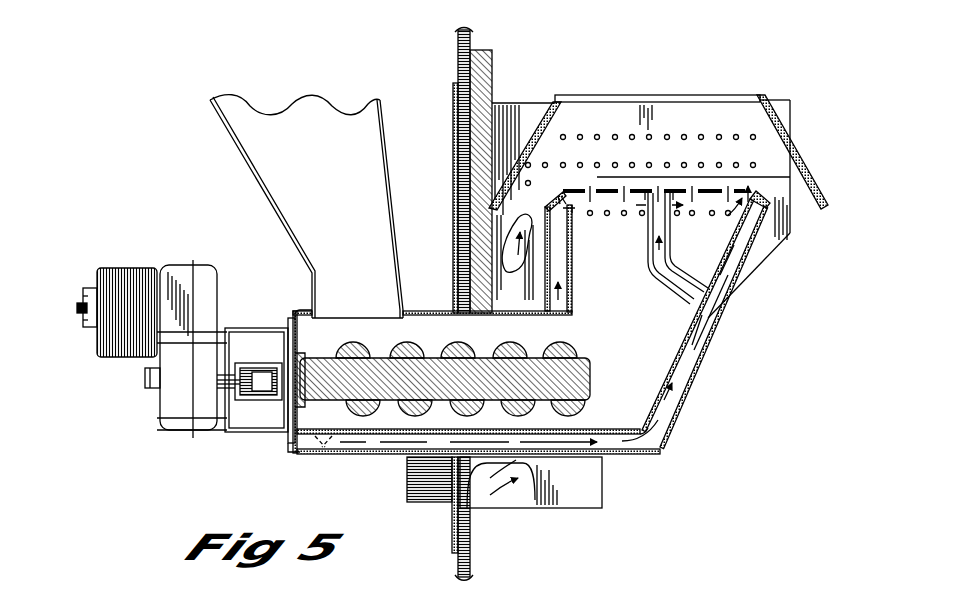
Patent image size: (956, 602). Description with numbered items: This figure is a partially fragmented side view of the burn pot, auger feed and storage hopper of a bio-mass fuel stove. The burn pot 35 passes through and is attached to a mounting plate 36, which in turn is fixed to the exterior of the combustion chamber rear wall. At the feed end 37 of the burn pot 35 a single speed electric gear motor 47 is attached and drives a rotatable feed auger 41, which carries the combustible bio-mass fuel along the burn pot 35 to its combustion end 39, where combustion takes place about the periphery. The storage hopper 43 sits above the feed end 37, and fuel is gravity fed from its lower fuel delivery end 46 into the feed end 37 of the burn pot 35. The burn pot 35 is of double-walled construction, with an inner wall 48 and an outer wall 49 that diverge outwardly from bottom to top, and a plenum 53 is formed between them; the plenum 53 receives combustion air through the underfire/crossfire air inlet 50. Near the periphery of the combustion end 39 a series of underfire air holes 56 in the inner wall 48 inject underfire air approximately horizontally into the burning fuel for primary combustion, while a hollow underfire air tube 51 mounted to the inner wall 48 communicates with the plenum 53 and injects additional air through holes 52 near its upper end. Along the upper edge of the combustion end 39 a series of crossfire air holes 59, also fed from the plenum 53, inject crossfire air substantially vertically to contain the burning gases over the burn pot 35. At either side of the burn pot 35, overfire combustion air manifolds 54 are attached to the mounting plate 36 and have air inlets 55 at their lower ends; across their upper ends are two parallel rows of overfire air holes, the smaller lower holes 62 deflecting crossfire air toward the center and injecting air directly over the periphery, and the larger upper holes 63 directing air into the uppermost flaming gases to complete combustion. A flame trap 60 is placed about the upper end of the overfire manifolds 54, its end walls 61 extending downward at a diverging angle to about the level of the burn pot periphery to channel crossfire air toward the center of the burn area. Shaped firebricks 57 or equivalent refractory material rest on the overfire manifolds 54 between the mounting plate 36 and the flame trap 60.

The burn pot 35 is at (690, 343).
The mounting plate 36 is at (453, 103).
The feed end 37 is at (290, 452).
The combustion end 39 is at (477, 378).
The feed auger 41 is at (583, 358).
The storage hopper 43 is at (306, 207).
The lower fuel delivery end 46 is at (357, 310).
The single speed electric gear motor 47 is at (130, 268).
The inner wall 48 is at (672, 362).
The outer wall 49 is at (702, 372).
The underfire/crossfire air inlet 50 is at (330, 440).
The underfire air tube 51 is at (648, 268).
The holes 52 is at (668, 222).
The plenum 53 is at (705, 324).
The overfire combustion air manifold 54 is at (662, 184).
The air inlet 55 is at (407, 472).
The underfire air holes 56 is at (606, 219).
The shaped firebricks 57 is at (490, 55).
The crossfire air holes 59 is at (580, 198).
The flame trap 60 is at (645, 96).
The end walls 61 is at (545, 118).
The lower overfire air holes 62 is at (705, 165).
The upper overfire air holes 63 is at (597, 133).